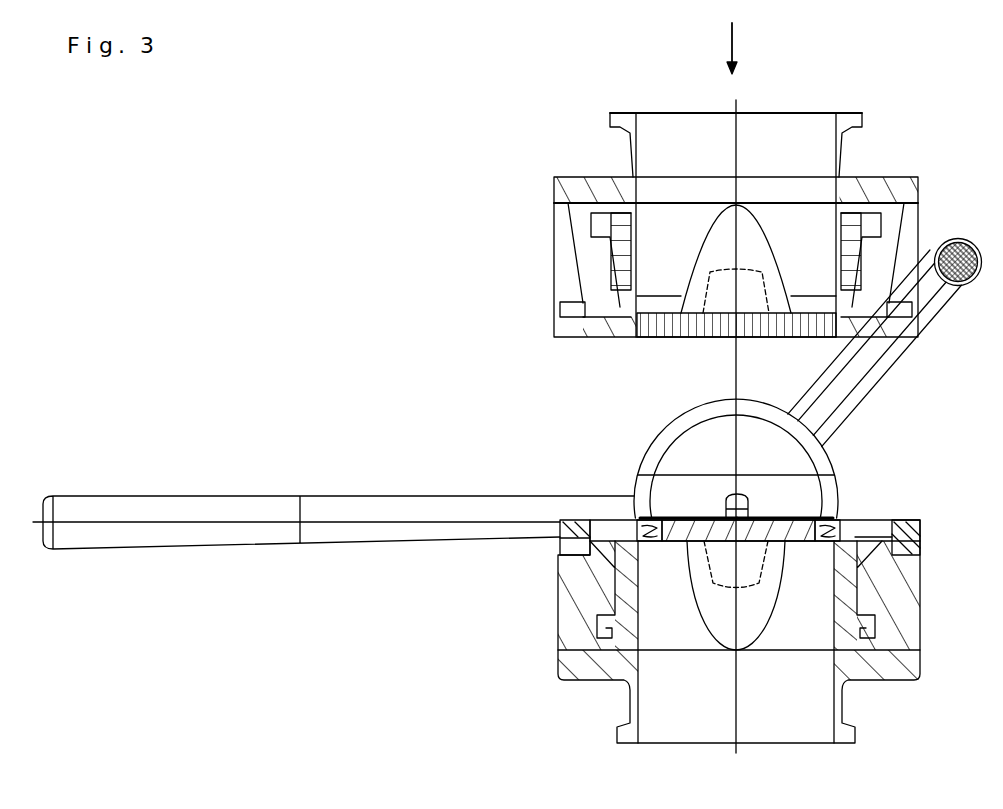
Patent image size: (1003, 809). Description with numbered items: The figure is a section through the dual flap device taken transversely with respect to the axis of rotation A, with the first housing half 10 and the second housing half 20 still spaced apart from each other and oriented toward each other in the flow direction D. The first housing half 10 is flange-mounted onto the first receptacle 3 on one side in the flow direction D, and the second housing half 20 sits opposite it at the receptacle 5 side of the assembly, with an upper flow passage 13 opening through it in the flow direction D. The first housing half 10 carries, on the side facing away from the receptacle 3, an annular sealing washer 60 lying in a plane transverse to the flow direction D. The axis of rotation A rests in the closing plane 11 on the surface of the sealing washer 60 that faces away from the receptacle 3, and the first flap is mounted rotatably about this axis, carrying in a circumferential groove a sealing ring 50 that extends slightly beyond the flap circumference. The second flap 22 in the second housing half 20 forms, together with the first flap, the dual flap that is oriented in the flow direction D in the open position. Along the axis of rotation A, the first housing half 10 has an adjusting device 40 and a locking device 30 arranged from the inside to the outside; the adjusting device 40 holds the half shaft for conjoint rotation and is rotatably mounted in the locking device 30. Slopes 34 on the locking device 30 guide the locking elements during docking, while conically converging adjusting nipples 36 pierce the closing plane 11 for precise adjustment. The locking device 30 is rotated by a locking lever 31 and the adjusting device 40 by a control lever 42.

The first receptacle 3 is at (557, 658).
The upper housing part 5 is at (580, 197).
The first housing half 10 is at (657, 626).
The closing plane 11 is at (795, 514).
The upper flow passage 13 is at (811, 310).
The second housing half 20 is at (628, 228).
The second flap 22 is at (652, 303).
The locking device 30 is at (672, 435).
The locking lever 31 is at (827, 358).
The slopes 34 is at (722, 517).
The adjusting nipples 36 is at (728, 497).
The adjusting device 40 is at (703, 445).
The control lever 42 is at (447, 532).
The sealing ring 50 is at (660, 518).
The sealing washer 60 is at (566, 311).
The axis of rotation A is at (584, 601).
The flow direction D is at (741, 48).